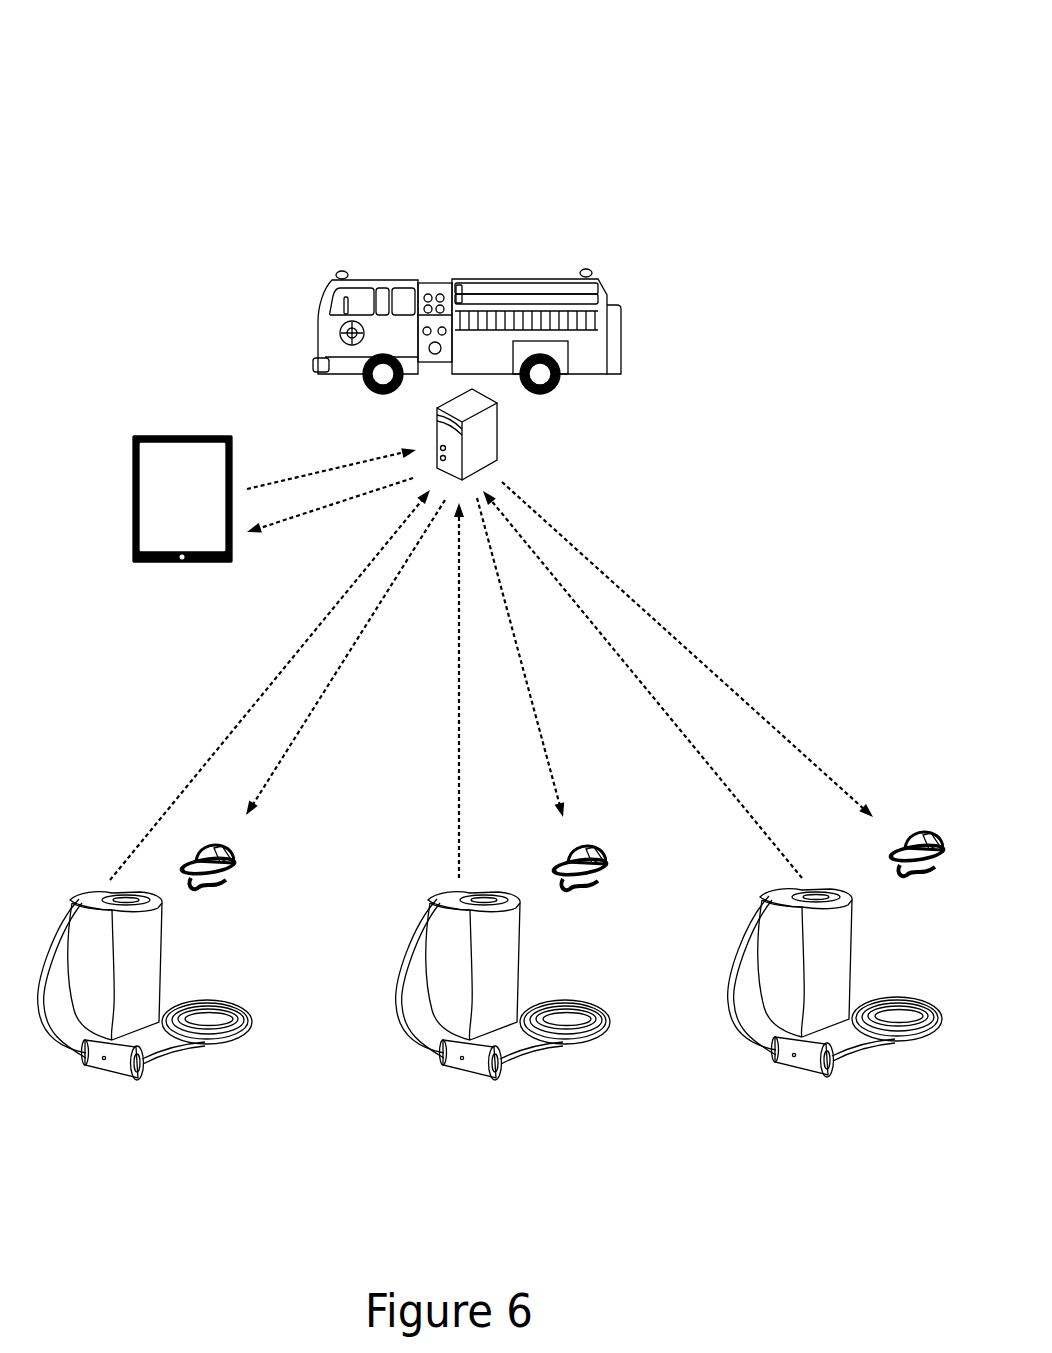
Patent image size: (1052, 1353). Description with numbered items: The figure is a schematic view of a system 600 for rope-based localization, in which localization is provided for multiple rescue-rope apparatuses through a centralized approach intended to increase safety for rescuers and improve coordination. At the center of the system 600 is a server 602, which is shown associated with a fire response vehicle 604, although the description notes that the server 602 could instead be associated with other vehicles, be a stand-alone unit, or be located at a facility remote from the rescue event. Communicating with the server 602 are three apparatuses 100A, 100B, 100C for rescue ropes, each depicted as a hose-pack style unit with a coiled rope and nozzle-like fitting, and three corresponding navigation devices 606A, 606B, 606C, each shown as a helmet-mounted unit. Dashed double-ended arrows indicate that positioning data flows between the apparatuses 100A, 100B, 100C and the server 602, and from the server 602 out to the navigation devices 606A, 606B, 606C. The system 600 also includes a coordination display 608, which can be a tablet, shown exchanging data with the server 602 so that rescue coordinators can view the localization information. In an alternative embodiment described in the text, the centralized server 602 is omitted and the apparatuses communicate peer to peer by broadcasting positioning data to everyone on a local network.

The system for rope-based localization 600 is at (150, 60).
The fire response vehicle 604 is at (474, 278).
The server 602 is at (497, 430).
The coordination display 608 is at (185, 436).
The apparatus for rescue ropes 100A is at (80, 899).
The apparatus for rescue ropes 100B is at (427, 899).
The apparatus for rescue ropes 100C is at (758, 905).
The navigation device 606A is at (235, 870).
The navigation device 606B is at (606, 870).
The navigation device 606C is at (918, 832).